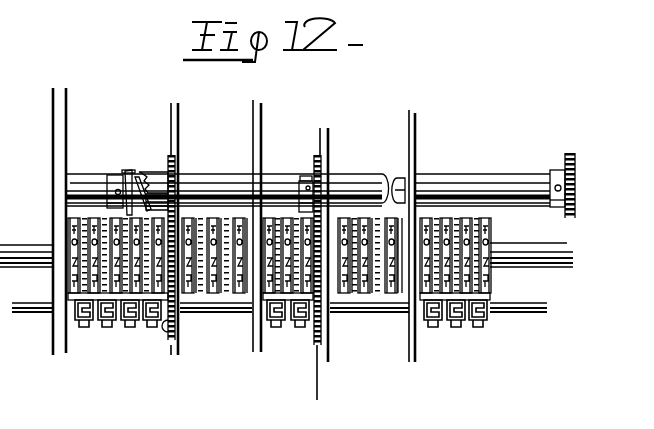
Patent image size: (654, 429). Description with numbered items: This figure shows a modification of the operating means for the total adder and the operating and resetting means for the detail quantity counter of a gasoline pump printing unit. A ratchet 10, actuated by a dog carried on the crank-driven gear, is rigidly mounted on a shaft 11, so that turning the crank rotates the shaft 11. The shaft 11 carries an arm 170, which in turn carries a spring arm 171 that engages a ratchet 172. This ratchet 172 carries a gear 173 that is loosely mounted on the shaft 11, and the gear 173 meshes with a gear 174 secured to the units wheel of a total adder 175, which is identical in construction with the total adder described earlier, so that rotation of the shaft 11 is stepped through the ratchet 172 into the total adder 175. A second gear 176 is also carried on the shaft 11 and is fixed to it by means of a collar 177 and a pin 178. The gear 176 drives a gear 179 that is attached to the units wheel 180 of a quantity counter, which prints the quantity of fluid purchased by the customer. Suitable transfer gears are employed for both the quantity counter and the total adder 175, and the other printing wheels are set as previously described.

The ratchet 10 is at (577, 163).
The shaft 11 is at (78, 185).
The arm 170 is at (130, 168).
The spring arm 171 is at (138, 176).
The ratchet 172 is at (154, 178).
The gear 173 is at (173, 160).
The gear 174 is at (173, 300).
The total adder 175 is at (130, 327).
The gear 176 is at (321, 160).
The collar 177 is at (308, 178).
The pin 178 is at (307, 187).
The gear 179 is at (301, 376).
The units wheel 180 is at (298, 327).